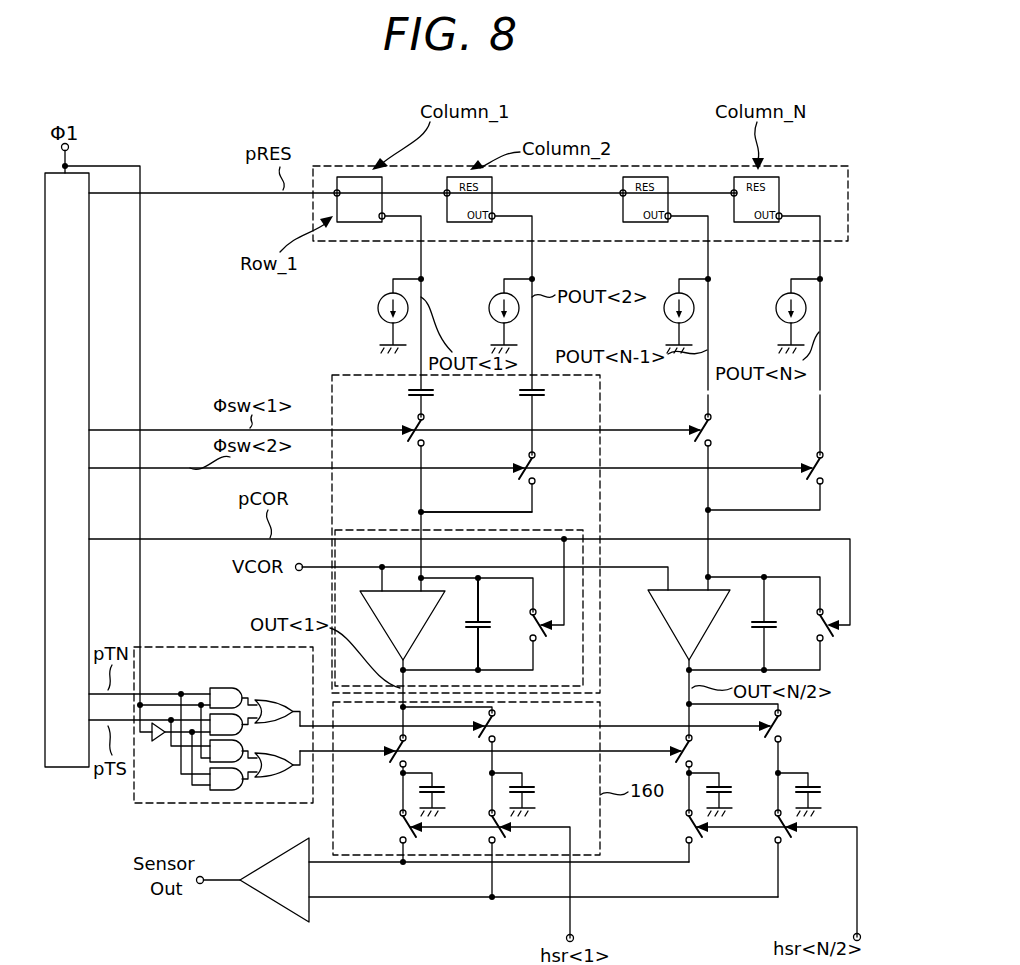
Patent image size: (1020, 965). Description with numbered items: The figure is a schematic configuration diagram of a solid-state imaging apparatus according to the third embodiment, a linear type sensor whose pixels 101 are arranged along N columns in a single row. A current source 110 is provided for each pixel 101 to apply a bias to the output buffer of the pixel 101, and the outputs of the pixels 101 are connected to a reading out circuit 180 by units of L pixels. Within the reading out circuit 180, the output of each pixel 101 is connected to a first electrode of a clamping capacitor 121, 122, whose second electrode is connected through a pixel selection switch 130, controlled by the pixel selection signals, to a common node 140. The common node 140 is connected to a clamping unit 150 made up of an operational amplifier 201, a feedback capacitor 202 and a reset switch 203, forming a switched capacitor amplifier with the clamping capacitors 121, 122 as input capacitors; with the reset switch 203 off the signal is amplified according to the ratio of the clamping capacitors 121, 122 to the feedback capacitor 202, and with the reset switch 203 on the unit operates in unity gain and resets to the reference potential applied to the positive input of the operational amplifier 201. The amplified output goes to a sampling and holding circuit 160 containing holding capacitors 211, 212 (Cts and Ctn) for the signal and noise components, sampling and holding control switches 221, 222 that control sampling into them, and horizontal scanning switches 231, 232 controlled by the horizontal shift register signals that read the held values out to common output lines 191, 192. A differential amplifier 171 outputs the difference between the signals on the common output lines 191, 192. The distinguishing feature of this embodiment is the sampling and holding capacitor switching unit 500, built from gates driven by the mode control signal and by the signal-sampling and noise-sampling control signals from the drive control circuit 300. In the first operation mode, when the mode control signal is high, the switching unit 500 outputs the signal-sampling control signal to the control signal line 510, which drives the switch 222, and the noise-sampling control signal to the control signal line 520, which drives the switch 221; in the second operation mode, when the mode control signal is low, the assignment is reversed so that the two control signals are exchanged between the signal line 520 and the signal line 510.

The drive control circuit 300 is at (89, 280).
The pixel 101 is at (385, 179).
The current source 110 is at (378, 308).
The clamping capacitor 121 is at (408, 395).
The clamping capacitor 122 is at (518, 392).
The pixel selection switch 130 is at (410, 420).
The common node 140 is at (418, 512).
The clamping unit 150 is at (560, 528).
The operational amplifier 201 is at (420, 637).
The feedback capacitor 202 is at (488, 624).
The reset switch 203 is at (538, 641).
The reading out circuit 180 is at (600, 645).
The sampling and holding capacitor switching unit 500 is at (223, 705).
The sampling and holding control signal line 510 is at (313, 708).
The sampling and holding control signal line 520 is at (313, 762).
The sampling and holding circuit 160 is at (466, 799).
The holding capacitor 211 is at (442, 790).
The holding capacitor 212 is at (536, 790).
The sampling and holding control switch 221 is at (395, 762).
The sampling and holding control switch 222 is at (500, 715).
The horizontal scanning switch 231 is at (400, 833).
The horizontal scanning switch 232 is at (510, 836).
The differential amplifier 171 is at (278, 852).
The common output line 191 is at (370, 863).
The common output line 192 is at (400, 897).